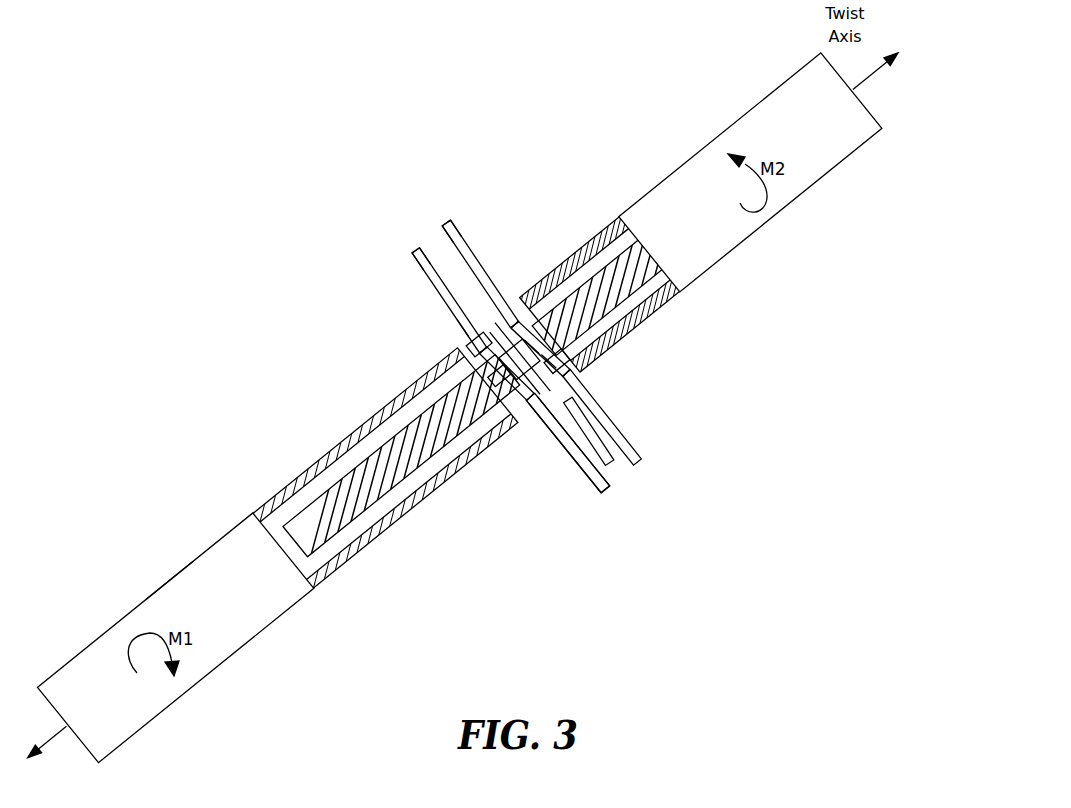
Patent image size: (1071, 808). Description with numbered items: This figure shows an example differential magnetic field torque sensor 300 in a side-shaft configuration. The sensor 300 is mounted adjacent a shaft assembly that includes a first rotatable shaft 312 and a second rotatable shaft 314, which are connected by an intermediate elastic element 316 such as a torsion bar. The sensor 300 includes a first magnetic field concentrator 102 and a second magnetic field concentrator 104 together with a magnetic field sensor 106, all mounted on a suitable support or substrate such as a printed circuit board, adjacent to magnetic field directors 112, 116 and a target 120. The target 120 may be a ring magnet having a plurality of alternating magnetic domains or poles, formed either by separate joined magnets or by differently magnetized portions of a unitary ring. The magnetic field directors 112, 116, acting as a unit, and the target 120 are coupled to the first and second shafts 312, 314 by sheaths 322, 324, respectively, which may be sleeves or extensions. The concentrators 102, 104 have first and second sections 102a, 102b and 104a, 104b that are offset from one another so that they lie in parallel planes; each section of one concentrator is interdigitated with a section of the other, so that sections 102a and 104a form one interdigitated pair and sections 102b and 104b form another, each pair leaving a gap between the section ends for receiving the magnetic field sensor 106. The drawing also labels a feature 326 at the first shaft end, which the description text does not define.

The differential magnetic field torque sensor 300 is at (278, 333).
The first rotatable shaft 312 is at (230, 660).
The second rotatable shaft 314 is at (738, 118).
The intermediate elastic element 316 is at (287, 525).
The sheath 322 is at (323, 463).
The sheath 324 is at (600, 232).
The end face of first block 326 is at (190, 562).
The first magnetic field concentrator 102 is at (513, 305).
The first section of first magnetic field concentrator 102a is at (548, 314).
The second section of first magnetic field concentrator 102b is at (548, 358).
The second magnetic field concentrator 104 is at (445, 323).
The first section of second magnetic field concentrator 104a is at (457, 331).
The second section of second magnetic field concentrator 104b is at (540, 420).
The magnetic field sensor 106 is at (442, 248).
The magnetic field director 112 is at (448, 222).
The magnetic field director 116 is at (412, 253).
The target 120 is at (614, 472).